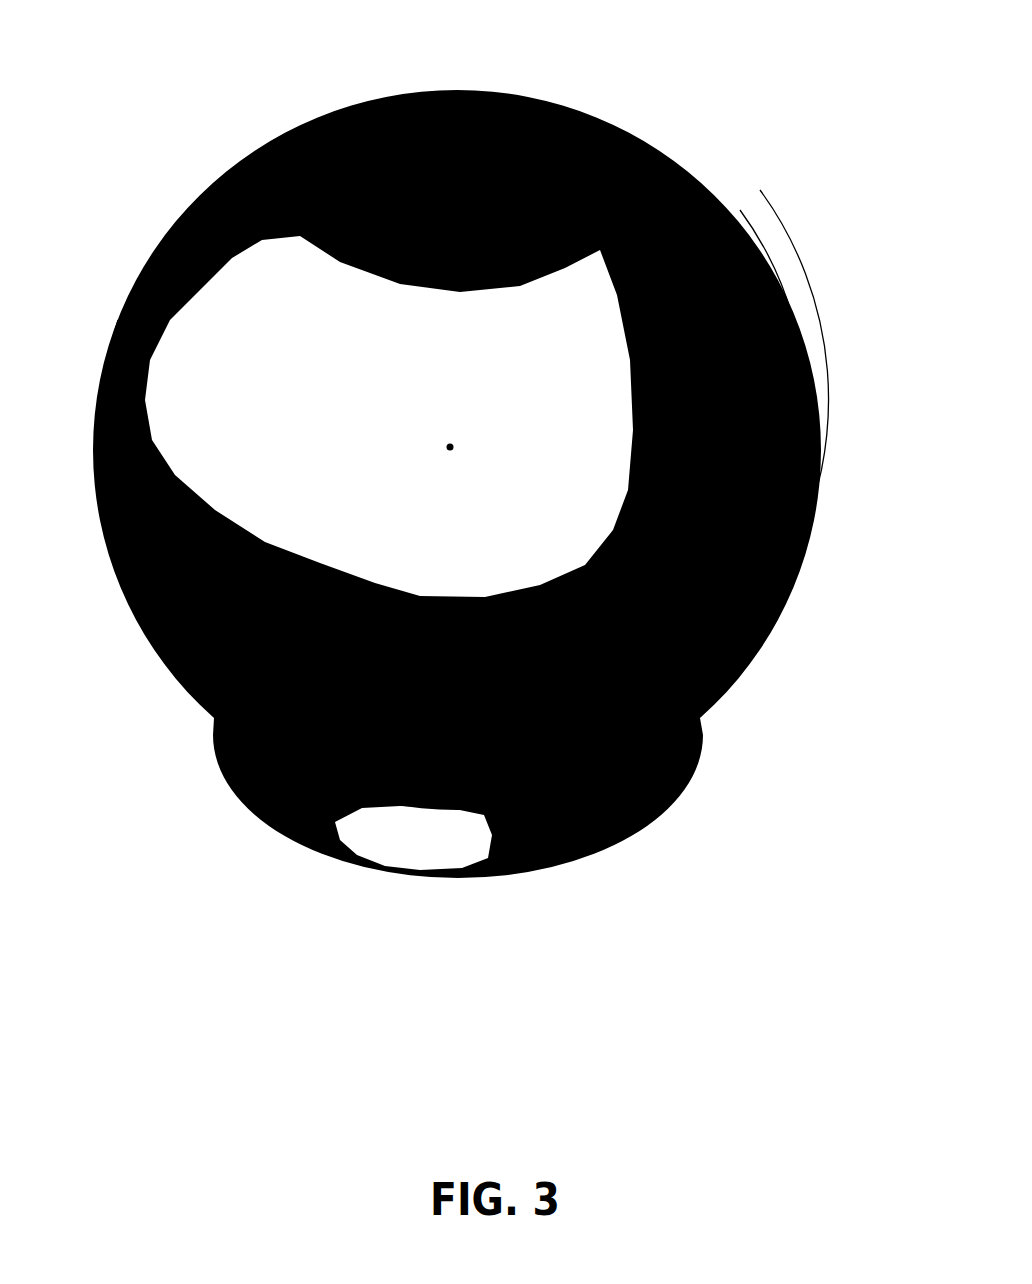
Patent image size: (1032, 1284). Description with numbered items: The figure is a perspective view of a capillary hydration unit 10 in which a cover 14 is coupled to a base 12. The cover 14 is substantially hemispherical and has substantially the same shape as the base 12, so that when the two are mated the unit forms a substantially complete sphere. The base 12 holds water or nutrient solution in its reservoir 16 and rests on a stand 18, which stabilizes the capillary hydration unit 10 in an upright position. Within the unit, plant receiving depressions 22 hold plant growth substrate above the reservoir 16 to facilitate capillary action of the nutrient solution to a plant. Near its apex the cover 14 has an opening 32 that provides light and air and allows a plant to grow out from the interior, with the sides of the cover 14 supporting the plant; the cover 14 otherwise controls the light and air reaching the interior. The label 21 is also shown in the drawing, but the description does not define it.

The capillary hydration unit 10 is at (898, 279).
The base 12 is at (752, 658).
The cover 14 is at (744, 205).
The reservoir 16 is at (127, 610).
The stand 18 is at (673, 795).
The outer layer 21 is at (817, 405).
The plant receiving depressions 22 is at (820, 458).
The opening 32 is at (442, 118).